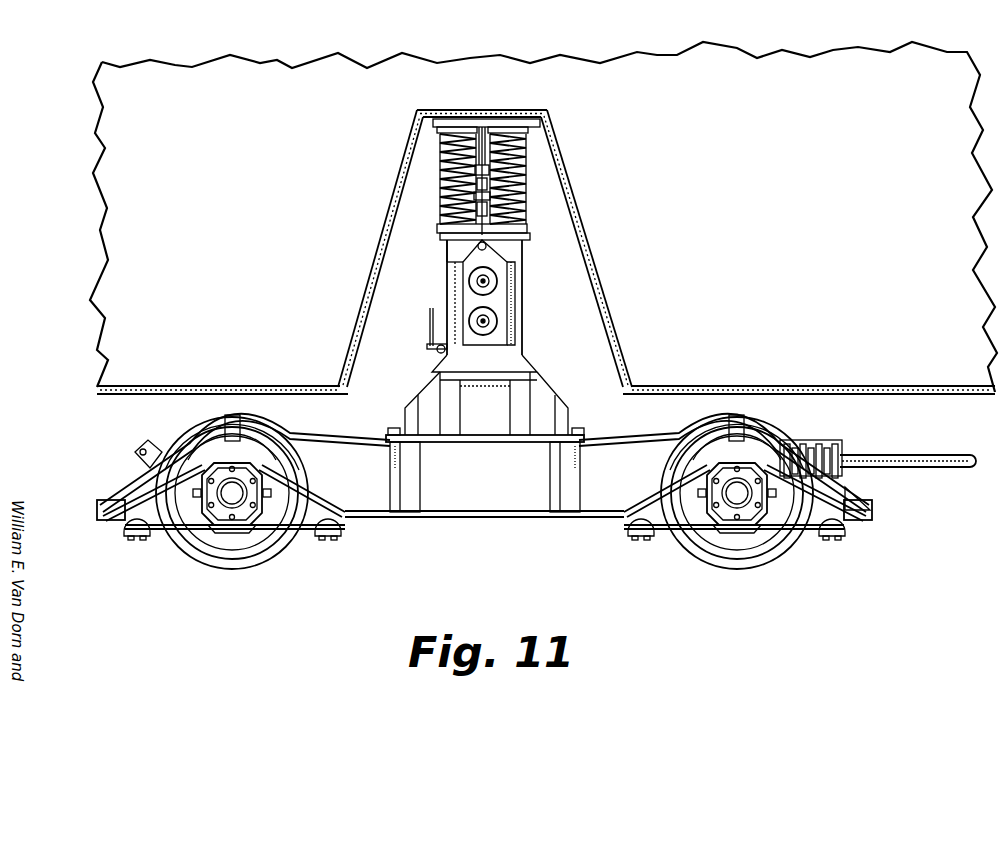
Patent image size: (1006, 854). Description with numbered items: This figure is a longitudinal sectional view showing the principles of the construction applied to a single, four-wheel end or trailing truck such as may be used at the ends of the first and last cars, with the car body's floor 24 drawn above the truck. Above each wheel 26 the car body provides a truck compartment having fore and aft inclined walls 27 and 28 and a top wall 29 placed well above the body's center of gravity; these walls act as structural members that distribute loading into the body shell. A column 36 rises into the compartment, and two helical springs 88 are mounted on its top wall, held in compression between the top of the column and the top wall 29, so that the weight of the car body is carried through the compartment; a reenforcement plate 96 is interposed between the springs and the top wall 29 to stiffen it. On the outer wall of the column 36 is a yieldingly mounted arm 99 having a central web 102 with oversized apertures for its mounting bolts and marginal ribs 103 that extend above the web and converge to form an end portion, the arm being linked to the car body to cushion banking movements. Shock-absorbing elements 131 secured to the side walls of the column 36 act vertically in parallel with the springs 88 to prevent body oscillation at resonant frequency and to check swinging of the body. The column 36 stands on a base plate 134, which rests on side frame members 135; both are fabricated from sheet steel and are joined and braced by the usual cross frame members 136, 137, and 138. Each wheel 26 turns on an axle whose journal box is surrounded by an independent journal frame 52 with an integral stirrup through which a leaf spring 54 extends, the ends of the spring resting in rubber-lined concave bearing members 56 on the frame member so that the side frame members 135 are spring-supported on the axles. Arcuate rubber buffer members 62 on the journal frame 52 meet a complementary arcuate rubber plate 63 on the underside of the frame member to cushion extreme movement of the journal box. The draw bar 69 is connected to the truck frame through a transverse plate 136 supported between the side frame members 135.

The car floor 24 is at (690, 386).
The inclined wall 27 is at (368, 284).
The inclined wall 28 is at (598, 275).
The top wall 29 is at (470, 110).
The reenforcement plate 96 is at (440, 124).
The helical springs 88 is at (440, 178).
The central web 102 is at (477, 300).
The column 36 is at (522, 317).
The arm 99 is at (455, 258).
The marginal ribs 103 is at (497, 284).
The shock-absorbing elements 131 is at (437, 347).
The base plates 134 is at (429, 378).
The cross frame member 138 is at (490, 436).
The cross frame member 137 is at (420, 482).
The side frame members 135 is at (488, 519).
The wheel 26 is at (213, 565).
The leaf spring 54 is at (200, 548).
The journal frame 52 is at (240, 530).
The arcuate buffer members 62 is at (245, 453).
The arcuate rubber plate 63 is at (242, 432).
The concave bearing members 56 is at (125, 532).
The cross frame member 136 is at (100, 505).
The draw bar 69 is at (905, 457).